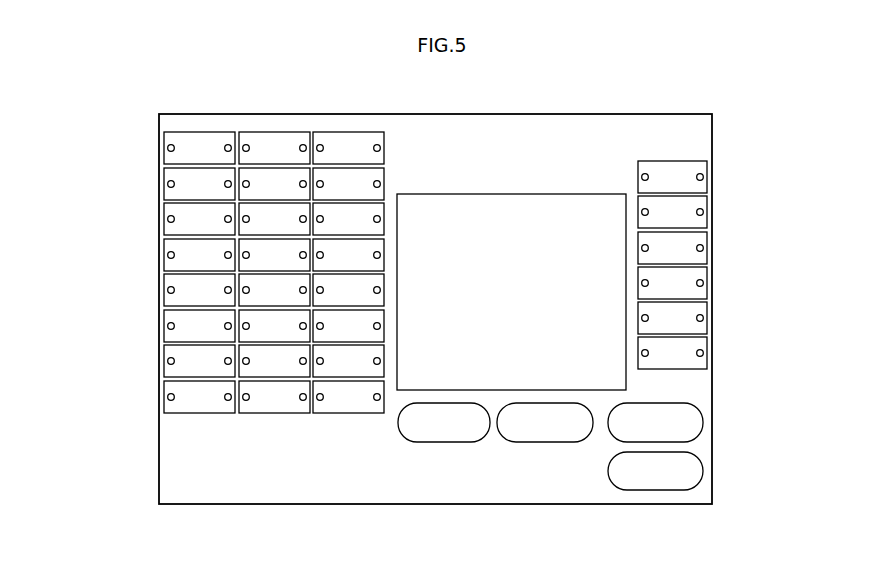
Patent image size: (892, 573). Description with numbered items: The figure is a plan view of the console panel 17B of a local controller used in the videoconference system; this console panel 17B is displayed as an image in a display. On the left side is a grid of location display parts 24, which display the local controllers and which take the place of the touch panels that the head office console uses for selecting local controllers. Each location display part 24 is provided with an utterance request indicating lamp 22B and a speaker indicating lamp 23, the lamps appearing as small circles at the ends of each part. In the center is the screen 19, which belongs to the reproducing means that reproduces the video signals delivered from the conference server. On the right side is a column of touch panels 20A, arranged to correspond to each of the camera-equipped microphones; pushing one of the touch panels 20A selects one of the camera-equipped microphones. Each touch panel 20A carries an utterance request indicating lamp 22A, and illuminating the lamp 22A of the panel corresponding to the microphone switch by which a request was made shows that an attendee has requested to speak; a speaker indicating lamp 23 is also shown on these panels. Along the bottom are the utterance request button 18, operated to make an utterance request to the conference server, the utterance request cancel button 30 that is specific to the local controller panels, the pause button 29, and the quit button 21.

The console panel 17B is at (152, 240).
The location display part 24 is at (166, 294).
The utterance request indicating lamp 22B is at (165, 361).
The speaker indicating lamp 23 is at (226, 363).
The touch panel 20A is at (707, 199).
The utterance request indicating lamp 22A is at (648, 247).
The screen 19 is at (563, 309).
The utterance request button 18 is at (449, 433).
The utterance request cancel button 30 is at (538, 433).
The pause button 29 is at (698, 422).
The quit button 21 is at (685, 474).